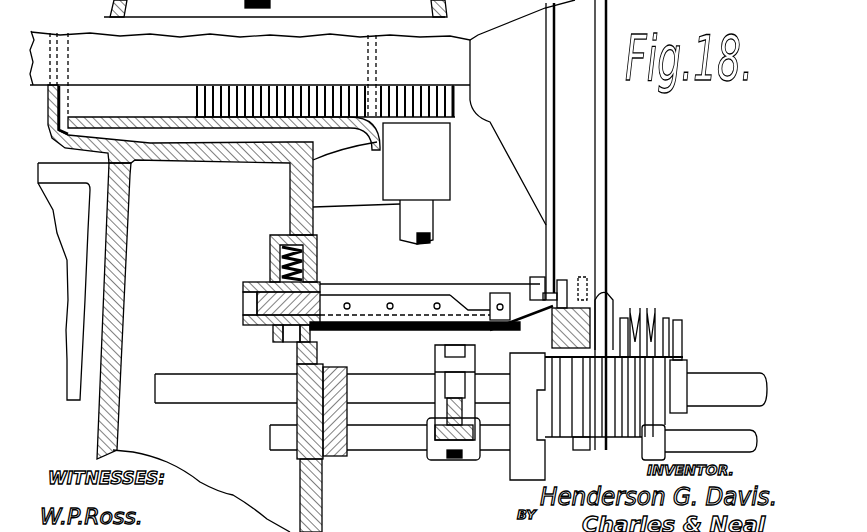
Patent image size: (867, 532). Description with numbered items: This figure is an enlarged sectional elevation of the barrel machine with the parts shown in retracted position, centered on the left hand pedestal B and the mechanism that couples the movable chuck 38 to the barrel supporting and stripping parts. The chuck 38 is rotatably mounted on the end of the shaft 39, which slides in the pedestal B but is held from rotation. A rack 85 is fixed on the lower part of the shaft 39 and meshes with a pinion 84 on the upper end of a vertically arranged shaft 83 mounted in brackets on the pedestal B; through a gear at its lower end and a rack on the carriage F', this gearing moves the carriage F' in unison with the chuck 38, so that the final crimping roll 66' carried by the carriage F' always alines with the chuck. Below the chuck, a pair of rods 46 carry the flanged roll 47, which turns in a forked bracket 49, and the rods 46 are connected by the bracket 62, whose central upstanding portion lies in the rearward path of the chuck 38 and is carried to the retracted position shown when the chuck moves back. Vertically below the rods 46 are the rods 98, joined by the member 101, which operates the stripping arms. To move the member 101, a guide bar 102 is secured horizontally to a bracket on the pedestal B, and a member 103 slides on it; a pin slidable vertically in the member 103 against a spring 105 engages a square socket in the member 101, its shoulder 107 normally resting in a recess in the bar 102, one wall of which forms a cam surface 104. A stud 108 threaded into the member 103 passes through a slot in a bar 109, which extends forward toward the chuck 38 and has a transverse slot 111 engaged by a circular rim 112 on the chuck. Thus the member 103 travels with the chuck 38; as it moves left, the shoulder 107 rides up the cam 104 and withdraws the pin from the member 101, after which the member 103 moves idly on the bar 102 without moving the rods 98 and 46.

The shaft 39 is at (302, 112).
The rack 85 is at (268, 86).
The pinion 84 is at (445, 102).
The pedestal B is at (128, 212).
The vertically arranged shaft 83 is at (420, 213).
The circular rim 112 is at (547, 186).
The chuck 38 is at (583, 143).
The spring 105 is at (272, 256).
The member 103 is at (318, 266).
The shoulder 107 is at (243, 313).
The stud 108 is at (293, 328).
The guide bar 102 is at (416, 298).
The cam surface 104 is at (461, 298).
The bar 109 is at (510, 295).
The transverse slot 111 is at (547, 313).
The bracket 62 is at (570, 297).
The roll 66' is at (630, 304).
The flanged roll 47 is at (652, 328).
The forked bracket 49 is at (681, 340).
The rod 46 is at (376, 385).
The rod 98 is at (383, 440).
The member 101 is at (453, 461).
The slidable bracket or carriage F' is at (504, 434).